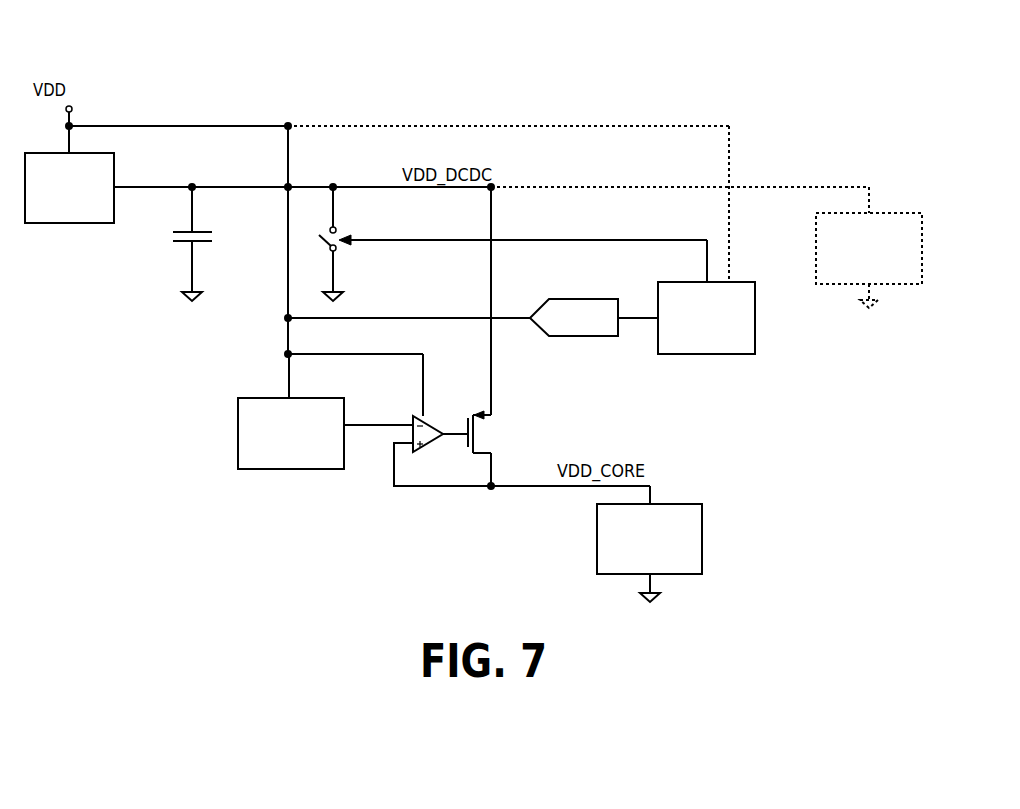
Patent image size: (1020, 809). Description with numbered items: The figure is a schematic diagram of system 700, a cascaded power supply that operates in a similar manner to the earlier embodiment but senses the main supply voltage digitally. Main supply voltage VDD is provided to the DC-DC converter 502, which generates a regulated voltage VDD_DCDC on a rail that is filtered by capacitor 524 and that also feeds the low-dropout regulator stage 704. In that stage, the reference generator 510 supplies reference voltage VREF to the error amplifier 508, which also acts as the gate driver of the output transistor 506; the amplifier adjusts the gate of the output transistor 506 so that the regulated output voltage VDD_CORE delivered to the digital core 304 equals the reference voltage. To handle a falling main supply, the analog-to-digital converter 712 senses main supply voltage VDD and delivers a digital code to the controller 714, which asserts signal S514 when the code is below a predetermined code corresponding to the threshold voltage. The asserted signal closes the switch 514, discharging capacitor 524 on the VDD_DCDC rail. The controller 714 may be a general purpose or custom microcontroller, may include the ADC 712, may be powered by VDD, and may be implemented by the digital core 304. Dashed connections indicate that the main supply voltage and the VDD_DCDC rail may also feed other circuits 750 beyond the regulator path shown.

The system 700 is at (123, 53).
The other circuits 750 is at (843, 105).
The DC-DC converter 502 is at (88, 152).
The capacitor 524 is at (205, 231).
The switch 514 is at (337, 229).
The analog-to-digital converter (ADC) 712 is at (560, 299).
The controller 714 is at (755, 333).
The reference generator 510 is at (302, 398).
The low dropout regulator 704 is at (577, 405).
The error amplifier 508 is at (422, 451).
The output transistor 506 is at (475, 444).
The digital core 304 is at (670, 504).